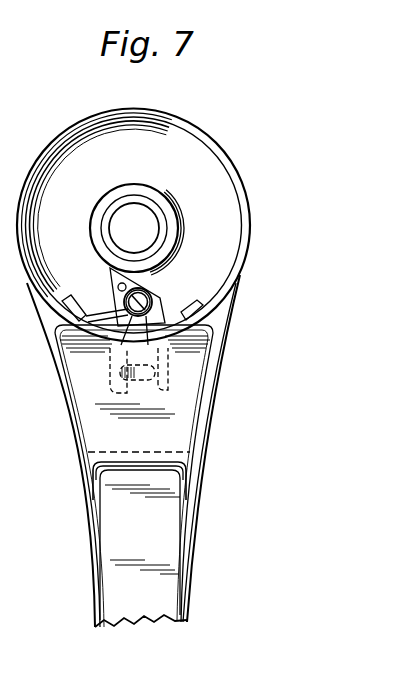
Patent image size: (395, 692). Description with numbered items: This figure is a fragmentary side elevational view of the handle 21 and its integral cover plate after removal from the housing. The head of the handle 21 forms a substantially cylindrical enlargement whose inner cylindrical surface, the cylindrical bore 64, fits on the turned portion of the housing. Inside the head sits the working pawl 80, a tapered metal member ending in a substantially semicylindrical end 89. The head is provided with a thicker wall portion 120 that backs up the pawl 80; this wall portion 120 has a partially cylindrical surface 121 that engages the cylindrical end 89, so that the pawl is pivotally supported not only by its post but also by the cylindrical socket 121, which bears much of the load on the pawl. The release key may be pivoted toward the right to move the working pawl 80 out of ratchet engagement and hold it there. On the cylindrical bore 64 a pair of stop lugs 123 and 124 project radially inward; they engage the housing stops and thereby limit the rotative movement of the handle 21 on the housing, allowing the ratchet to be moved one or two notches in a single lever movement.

The handle 21 is at (234, 167).
The cylindrical bore 64 is at (235, 209).
The working pawl 80 is at (156, 287).
The semicylindrical end 89 is at (137, 307).
The thicker wall portion 120 is at (160, 316).
The partially cylindrical surface 121 is at (151, 298).
The stop lug 123 is at (84, 292).
The stop lug 124 is at (163, 322).